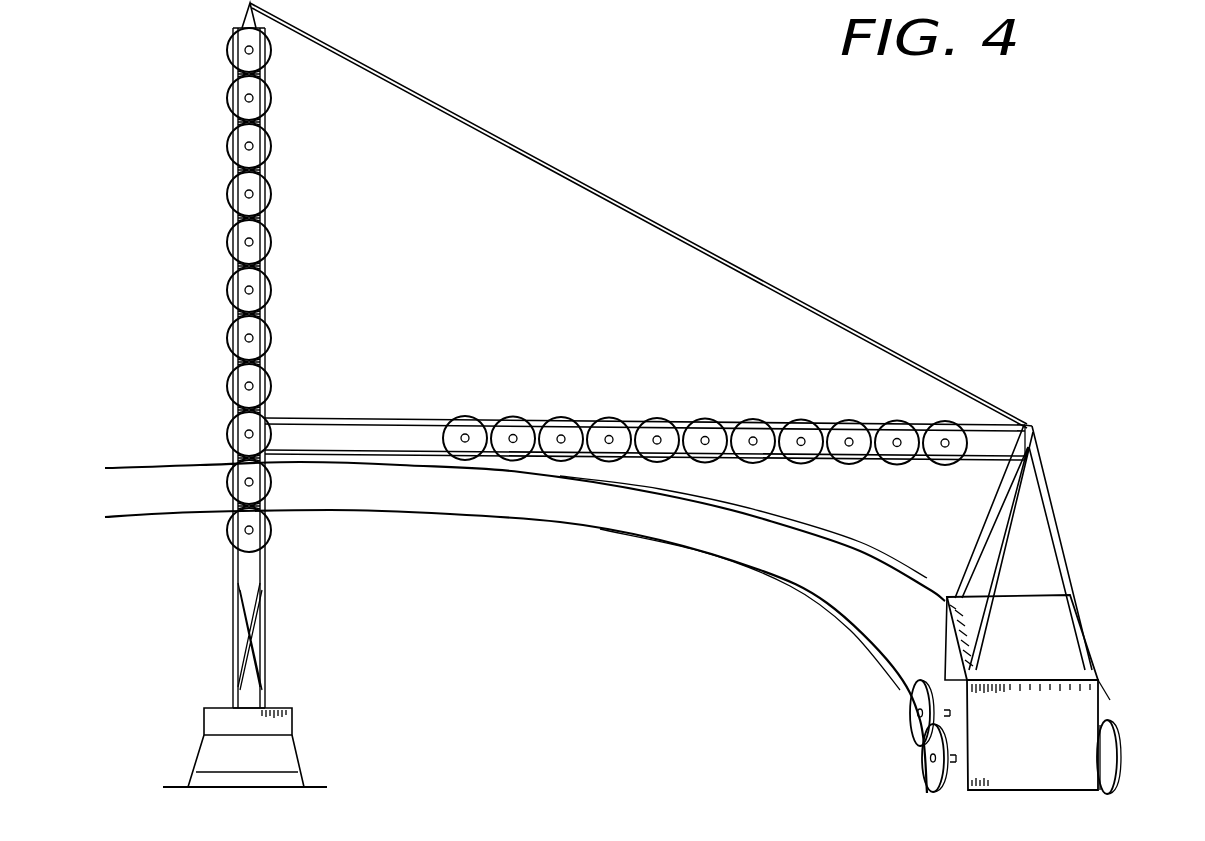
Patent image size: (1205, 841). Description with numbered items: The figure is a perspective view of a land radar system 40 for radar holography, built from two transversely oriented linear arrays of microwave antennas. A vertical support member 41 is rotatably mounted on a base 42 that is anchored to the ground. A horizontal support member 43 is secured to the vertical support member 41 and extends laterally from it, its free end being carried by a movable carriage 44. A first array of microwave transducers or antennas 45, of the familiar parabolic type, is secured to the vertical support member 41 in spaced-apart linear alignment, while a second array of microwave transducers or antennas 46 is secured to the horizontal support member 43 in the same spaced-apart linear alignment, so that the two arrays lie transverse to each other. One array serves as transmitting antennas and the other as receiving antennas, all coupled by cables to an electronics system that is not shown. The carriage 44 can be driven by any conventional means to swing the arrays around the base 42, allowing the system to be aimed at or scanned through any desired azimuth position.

The land radar system 40 is at (884, 234).
The vertical support member 41 is at (267, 313).
The base 42 is at (196, 742).
The horizontal support member 43 is at (407, 420).
The movable carriage 44 is at (1090, 632).
The first array of microwave transducers or antennas 45 is at (228, 232).
The second array of microwave transducers or antennas 46 is at (656, 420).